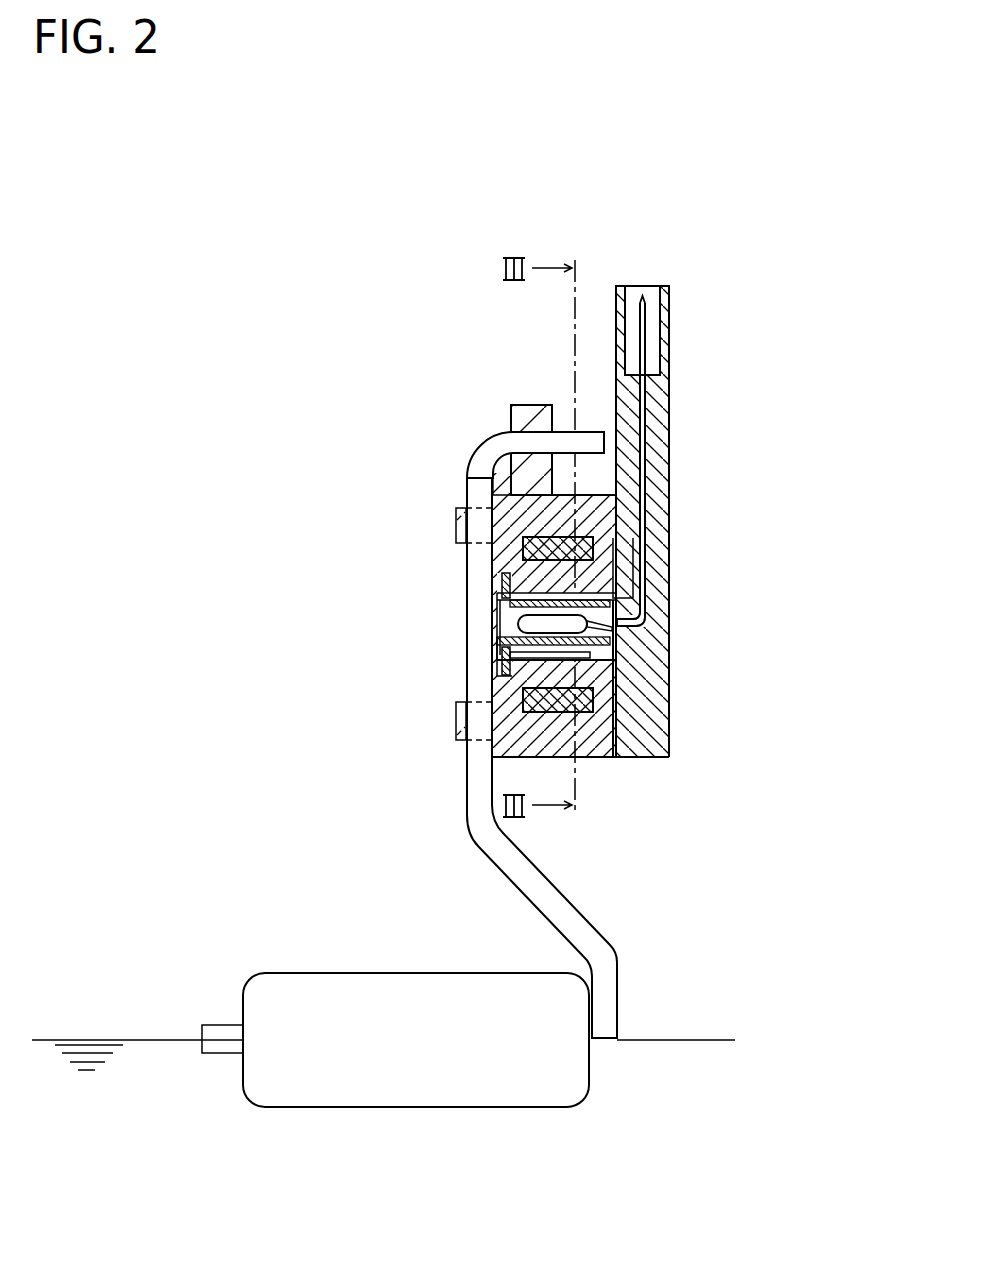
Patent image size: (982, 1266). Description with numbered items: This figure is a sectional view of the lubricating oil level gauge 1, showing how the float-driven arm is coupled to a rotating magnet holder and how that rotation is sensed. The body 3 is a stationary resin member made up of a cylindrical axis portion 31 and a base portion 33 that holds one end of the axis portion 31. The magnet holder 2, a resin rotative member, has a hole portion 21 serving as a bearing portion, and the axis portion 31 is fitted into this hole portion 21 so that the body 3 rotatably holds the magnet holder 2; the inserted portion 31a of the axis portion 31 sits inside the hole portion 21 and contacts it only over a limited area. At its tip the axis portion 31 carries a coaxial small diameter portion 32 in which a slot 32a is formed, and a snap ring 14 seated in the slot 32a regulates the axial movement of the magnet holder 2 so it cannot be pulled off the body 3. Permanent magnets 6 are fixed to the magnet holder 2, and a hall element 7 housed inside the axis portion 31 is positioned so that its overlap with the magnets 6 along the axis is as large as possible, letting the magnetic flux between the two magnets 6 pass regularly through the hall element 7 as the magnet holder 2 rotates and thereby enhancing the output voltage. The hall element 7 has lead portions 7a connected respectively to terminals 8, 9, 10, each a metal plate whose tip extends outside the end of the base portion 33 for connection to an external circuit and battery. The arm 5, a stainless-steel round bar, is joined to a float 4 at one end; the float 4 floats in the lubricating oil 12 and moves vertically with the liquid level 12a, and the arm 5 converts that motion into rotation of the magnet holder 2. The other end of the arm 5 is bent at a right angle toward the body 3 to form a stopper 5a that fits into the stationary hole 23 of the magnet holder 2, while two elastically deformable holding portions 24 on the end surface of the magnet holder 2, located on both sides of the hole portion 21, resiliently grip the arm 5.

The lubricating oil level gauge 1 is at (190, 186).
The magnet holder 2 is at (500, 626).
The body 3 is at (682, 595).
The float 4 is at (275, 973).
The arm 5 is at (467, 830).
The stopper 5a is at (565, 433).
The permanent magnets 6 is at (608, 695).
The hall element 7 is at (592, 657).
The lead portions 7a is at (612, 653).
The terminal 8 is at (648, 337).
The terminal 9 is at (642, 460).
The terminal 10 is at (642, 460).
The lubricating oil 12 is at (155, 1085).
The liquid level 12a is at (82, 1040).
The snap ring 14 is at (502, 588).
The hole portion 21 is at (466, 708).
The stationary hole 23 is at (494, 481).
The holding portions 24 is at (456, 520).
The axis portion 31 is at (600, 657).
The inserted portion 31a is at (597, 663).
The small diameter portion 32 is at (502, 668).
The slot 32a is at (498, 685).
The base portion 33 is at (671, 405).